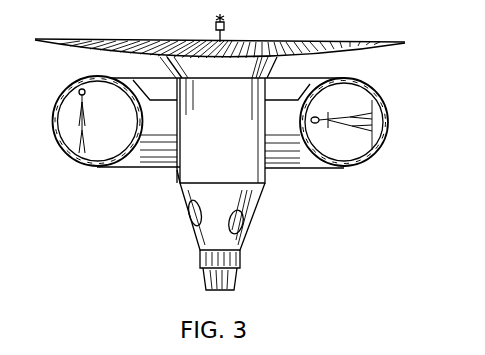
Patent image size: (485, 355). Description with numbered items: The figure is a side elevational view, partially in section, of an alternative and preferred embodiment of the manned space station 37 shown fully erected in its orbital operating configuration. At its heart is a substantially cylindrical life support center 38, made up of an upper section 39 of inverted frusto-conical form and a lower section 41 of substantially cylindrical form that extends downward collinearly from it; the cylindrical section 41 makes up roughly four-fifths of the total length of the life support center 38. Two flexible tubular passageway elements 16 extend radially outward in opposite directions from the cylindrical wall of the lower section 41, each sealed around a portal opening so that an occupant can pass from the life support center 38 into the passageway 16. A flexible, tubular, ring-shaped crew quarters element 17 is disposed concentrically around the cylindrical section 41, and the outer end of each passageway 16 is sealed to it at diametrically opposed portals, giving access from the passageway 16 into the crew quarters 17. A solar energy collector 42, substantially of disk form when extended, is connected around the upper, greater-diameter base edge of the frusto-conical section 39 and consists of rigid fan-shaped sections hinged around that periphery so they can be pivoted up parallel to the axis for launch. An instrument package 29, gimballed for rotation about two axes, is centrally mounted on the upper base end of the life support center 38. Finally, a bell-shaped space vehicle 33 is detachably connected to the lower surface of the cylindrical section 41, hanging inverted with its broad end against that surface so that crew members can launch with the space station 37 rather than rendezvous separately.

The flexible tubular passageway element 16 is at (152, 105).
The crew quarters element 17 is at (67, 83).
The instrument package 29 is at (225, 34).
The space vehicle 33 is at (245, 221).
The space station 37 is at (147, 195).
The life support center 38 is at (229, 160).
The upper section 39 is at (270, 66).
The lower section 41 is at (175, 176).
The solar energy collector 42 is at (284, 41).